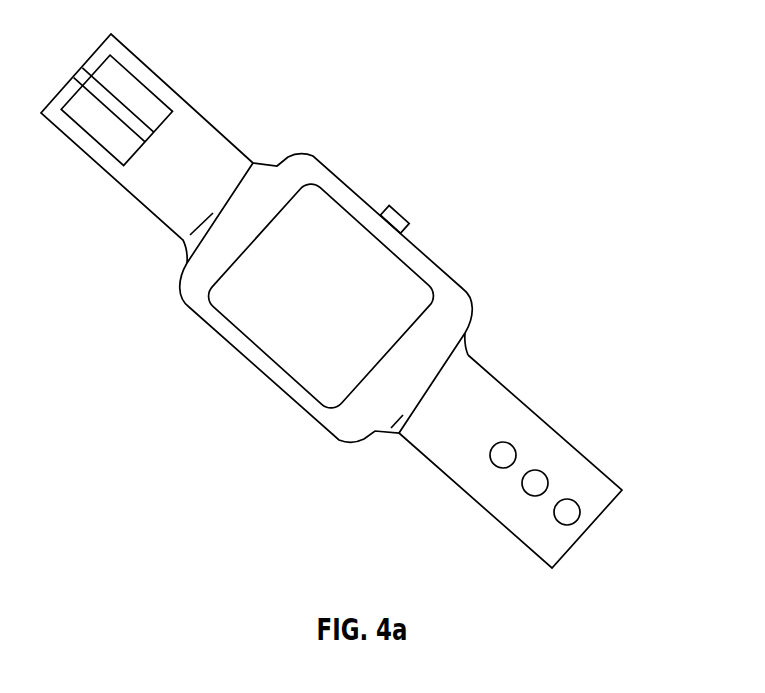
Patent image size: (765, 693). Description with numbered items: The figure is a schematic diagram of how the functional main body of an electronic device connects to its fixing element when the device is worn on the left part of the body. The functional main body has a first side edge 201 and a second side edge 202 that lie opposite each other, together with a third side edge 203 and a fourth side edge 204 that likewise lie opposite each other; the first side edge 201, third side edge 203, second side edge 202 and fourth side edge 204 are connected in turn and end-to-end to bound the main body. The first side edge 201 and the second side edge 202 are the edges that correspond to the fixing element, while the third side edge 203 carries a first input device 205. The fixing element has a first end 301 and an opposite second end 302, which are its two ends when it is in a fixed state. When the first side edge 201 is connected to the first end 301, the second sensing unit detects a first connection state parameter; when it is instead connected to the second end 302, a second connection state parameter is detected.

The first side edge 201 is at (253, 163).
The second side edge 202 is at (386, 431).
The third side edge 203 is at (422, 263).
The fourth side edge 204 is at (265, 365).
The first input device 205 is at (403, 213).
The first end 301 is at (203, 183).
The second end 302 is at (448, 395).